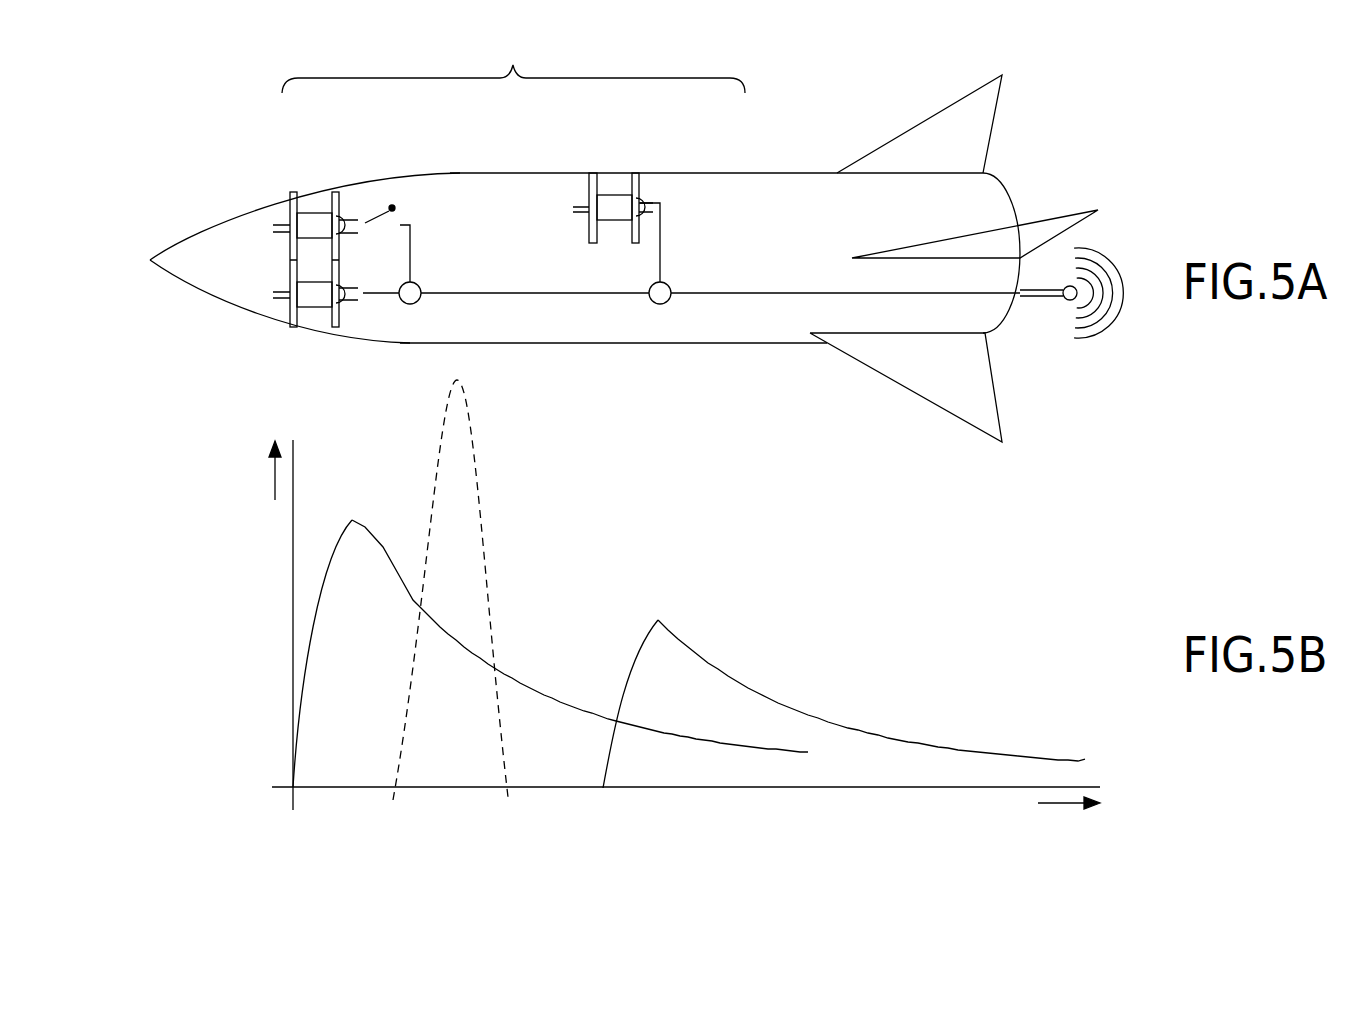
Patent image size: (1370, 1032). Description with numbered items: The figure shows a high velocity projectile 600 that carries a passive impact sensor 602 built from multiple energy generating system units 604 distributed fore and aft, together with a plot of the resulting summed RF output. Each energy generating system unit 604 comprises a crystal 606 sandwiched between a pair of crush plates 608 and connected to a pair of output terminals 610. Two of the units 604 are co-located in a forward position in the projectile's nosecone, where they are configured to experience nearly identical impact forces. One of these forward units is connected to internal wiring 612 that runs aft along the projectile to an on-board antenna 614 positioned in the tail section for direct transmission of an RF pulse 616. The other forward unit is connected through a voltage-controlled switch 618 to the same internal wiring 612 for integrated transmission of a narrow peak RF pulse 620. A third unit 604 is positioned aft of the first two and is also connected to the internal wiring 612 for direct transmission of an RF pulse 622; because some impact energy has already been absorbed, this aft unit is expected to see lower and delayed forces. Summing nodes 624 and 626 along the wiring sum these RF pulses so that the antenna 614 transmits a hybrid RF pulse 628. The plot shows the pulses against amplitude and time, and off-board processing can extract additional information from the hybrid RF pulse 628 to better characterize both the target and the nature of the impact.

In FIG. 5A, the projectile 600 is at (1140, 87).
In FIG. 5A, the passive impact sensor 602 is at (513, 62).
In FIG. 5A, the energy generating system unit 604 is at (263, 207).
In FIG. 5A, the crystal 606 is at (608, 222).
In FIG. 5A, the crush plates 608 is at (297, 188).
In FIG. 5A, the output terminals 610 is at (320, 310).
In FIG. 5A, the internal wiring 612 is at (733, 293).
In FIG. 5A, the on-board antenna 614 is at (1035, 297).
In FIG. 5B, the RF pulse 616 is at (352, 518).
In FIG. 5A, the voltage-controlled switch 618 is at (393, 201).
In FIG. 5B, the narrow peak RF pulse 620 is at (473, 432).
In FIG. 5B, the RF pulse 622 is at (665, 620).
In FIG. 5A, the summing node 624 is at (403, 307).
In FIG. 5A, the summing node 626 is at (660, 305).
In FIG. 5A, the hybrid RF pulse 628 is at (1117, 261).
In FIG. 5B, the hybrid RF pulse 628 is at (690, 490).